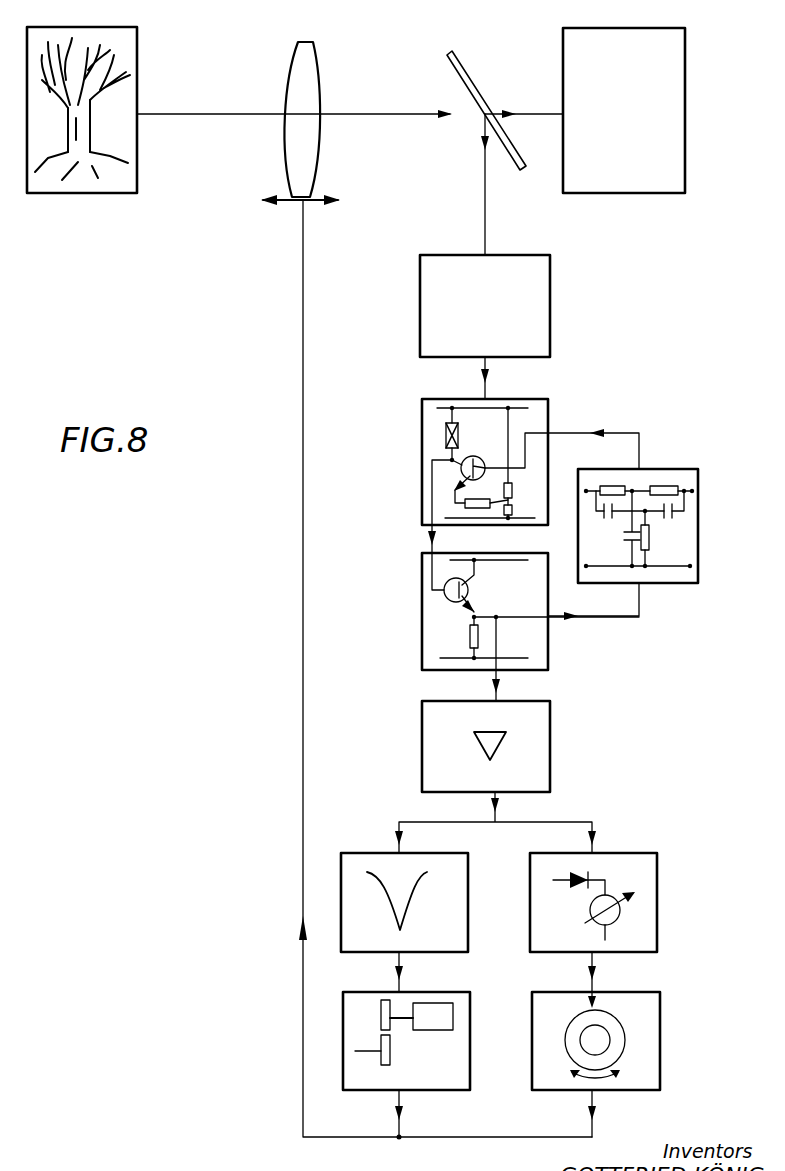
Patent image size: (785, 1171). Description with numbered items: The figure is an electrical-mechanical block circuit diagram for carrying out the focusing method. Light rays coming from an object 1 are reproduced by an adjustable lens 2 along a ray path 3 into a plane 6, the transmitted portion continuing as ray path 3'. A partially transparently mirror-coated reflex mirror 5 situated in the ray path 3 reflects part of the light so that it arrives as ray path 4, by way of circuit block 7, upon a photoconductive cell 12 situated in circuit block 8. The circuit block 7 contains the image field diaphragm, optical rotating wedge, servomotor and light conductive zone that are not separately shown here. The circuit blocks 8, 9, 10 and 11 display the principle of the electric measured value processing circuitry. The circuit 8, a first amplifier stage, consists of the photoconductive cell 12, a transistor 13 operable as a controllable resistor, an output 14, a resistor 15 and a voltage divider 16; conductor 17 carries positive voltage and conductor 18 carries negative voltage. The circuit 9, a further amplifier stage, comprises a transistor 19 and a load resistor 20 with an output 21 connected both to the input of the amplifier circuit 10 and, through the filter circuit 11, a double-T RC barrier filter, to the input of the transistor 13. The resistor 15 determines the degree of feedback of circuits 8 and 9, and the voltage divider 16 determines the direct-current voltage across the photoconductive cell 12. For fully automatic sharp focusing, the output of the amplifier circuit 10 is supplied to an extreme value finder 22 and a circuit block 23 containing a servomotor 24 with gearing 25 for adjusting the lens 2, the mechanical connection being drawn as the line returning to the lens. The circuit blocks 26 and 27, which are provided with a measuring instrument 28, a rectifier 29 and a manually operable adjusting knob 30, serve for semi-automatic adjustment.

The object 1 is at (120, 128).
The adjustable lens 2 is at (308, 147).
The ray path 3 is at (294, 96).
The ray path 3' is at (524, 95).
The ray path 4 is at (482, 167).
The reflex mirror 5 is at (469, 73).
The plane 6 is at (637, 178).
The circuit block 7 is at (532, 300).
The circuit block 8 is at (510, 471).
The circuit block 9 is at (509, 627).
The amplifier circuit 10 is at (537, 722).
The filter circuit 11 is at (658, 481).
The photoconductive cell 12 is at (466, 434).
The transistor 13 is at (478, 460).
The output 14 is at (452, 489).
The resistor 15 is at (486, 495).
The voltage divider 16 is at (512, 496).
The conductor 17 is at (516, 410).
The conductor 18 is at (512, 515).
The transistor 19 is at (470, 585).
The load resistor 20 is at (469, 636).
The output 21 is at (480, 615).
The extreme value finder 22 is at (455, 893).
The circuit block 23 is at (424, 1064).
The servomotor 24 is at (430, 1030).
The gearing 25 is at (395, 1032).
The circuit block 26 is at (599, 906).
The circuit block 27 is at (613, 1054).
The measuring instrument 28 is at (617, 921).
The rectifier 29 is at (578, 895).
The adjusting knob 30 is at (617, 1037).